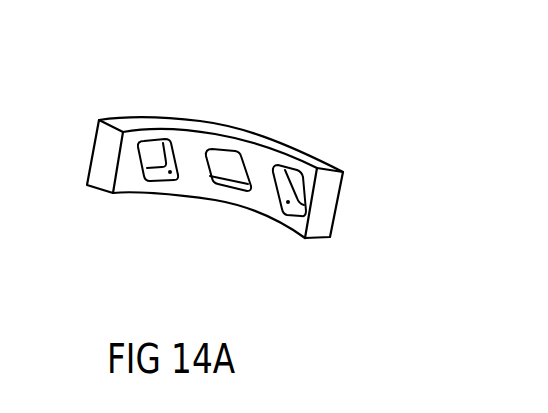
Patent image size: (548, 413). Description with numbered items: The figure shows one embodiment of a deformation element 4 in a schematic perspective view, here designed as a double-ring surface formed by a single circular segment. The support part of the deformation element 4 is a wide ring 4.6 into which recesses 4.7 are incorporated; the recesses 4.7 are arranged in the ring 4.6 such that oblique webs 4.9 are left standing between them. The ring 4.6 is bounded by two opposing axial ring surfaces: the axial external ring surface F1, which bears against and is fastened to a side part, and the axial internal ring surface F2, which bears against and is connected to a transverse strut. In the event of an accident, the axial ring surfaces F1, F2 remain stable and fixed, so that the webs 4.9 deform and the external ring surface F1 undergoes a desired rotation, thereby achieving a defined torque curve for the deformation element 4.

The deformation element 4 is at (248, 135).
The oblique webs 4.9 is at (187, 158).
The recesses 4.7 is at (224, 163).
The wide ring 4.6 is at (274, 160).
The axial external ring surface F1 is at (124, 118).
The axial internal ring surface F2 is at (123, 195).